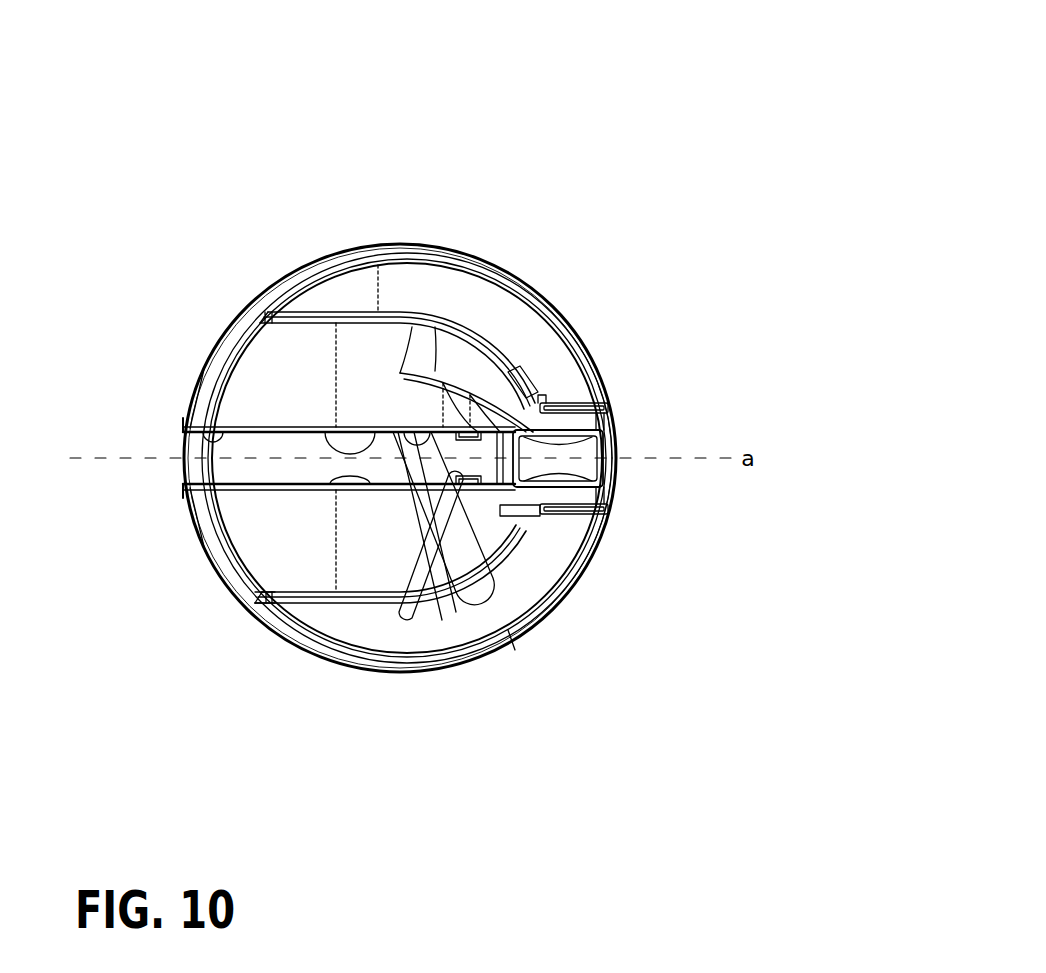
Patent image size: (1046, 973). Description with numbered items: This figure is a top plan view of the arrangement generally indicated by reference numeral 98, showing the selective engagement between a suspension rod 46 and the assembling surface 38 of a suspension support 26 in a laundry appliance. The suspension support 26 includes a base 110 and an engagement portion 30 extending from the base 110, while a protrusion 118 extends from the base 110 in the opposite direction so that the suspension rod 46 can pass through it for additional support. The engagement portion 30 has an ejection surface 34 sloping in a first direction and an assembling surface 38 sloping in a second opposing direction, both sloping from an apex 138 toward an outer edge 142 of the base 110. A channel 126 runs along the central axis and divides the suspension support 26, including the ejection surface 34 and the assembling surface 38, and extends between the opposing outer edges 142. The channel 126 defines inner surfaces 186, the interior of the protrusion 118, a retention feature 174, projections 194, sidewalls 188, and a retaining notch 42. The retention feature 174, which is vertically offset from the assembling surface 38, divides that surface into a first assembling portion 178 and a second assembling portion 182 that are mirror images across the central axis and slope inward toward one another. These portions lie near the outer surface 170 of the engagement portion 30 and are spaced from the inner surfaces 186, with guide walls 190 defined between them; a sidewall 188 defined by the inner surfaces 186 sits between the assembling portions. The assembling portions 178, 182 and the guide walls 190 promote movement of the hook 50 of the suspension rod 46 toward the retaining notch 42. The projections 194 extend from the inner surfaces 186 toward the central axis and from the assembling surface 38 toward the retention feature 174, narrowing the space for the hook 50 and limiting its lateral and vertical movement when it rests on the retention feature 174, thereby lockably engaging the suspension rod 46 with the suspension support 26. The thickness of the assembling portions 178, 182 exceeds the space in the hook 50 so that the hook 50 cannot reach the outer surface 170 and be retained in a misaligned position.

The fluid control assembly 98 is at (584, 111).
The suspension support 26 is at (293, 283).
The base 110 is at (442, 295).
The engagement portion 30 is at (357, 607).
The ejection surface 34 is at (258, 388).
The hook 50 is at (430, 498).
The protrusion 118 is at (317, 429).
The channel 126 is at (222, 436).
The inner surfaces 186 is at (407, 430).
The outer surface 170 is at (493, 352).
The guide walls 190 is at (497, 448).
The projections 194 is at (447, 430).
The suspension rod 46 is at (482, 567).
The assembling surface 38 is at (520, 380).
The second assembling portion 182 is at (535, 407).
The retention feature 174 is at (605, 401).
The sidewall 188 is at (610, 412).
The retaining notch 42 is at (622, 442).
The first assembling portion 178 is at (507, 513).
The outer edge 142 is at (512, 645).
The apex 138 is at (293, 592).